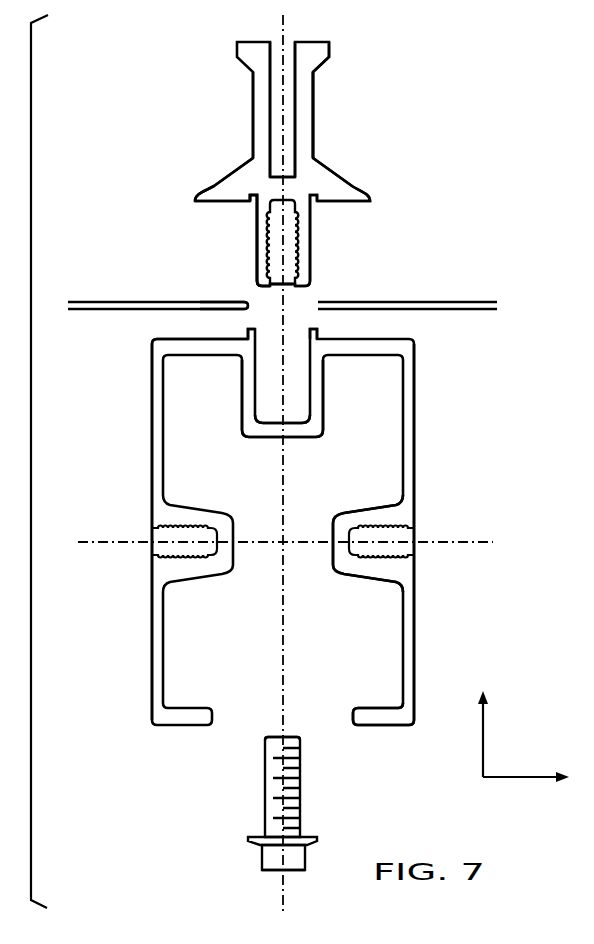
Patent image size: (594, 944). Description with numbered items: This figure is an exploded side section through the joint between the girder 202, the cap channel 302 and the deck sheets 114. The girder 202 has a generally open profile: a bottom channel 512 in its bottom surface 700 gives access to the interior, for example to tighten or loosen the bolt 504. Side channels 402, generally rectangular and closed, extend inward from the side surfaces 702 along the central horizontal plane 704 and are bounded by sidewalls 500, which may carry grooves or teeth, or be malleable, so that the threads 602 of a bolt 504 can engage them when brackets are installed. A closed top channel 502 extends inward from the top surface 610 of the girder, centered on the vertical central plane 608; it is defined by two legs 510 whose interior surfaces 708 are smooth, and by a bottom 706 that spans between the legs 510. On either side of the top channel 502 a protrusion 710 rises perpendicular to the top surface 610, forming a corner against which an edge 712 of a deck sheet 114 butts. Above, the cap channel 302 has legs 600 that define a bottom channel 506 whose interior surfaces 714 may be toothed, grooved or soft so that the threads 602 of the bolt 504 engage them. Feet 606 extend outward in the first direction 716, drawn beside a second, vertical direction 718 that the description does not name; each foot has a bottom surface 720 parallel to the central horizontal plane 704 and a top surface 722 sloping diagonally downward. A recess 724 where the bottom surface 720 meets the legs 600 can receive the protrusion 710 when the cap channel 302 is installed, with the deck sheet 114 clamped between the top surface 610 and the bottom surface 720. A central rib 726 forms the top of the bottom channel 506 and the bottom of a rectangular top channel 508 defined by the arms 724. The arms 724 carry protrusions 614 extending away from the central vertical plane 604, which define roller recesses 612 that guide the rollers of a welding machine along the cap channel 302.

The deck sheet 114 is at (413, 302).
The girder 202 is at (415, 645).
The cap channel 302 is at (312, 41).
The side channel 402 is at (359, 548).
The sidewall 500 is at (394, 531).
The top channel 502 is at (298, 358).
The bolt 504 is at (292, 872).
The bottom channel 506 is at (286, 280).
The top channel 508 is at (277, 49).
The leg 510 is at (243, 390).
The bottom channel 512 is at (243, 717).
The leg 600 is at (313, 244).
The threads 602 is at (301, 793).
The central vertical plane 604 is at (252, 880).
The foot 606 is at (333, 170).
The vertical central plane 608 is at (282, 886).
The top surface 610 is at (175, 338).
The roller recess 612 is at (329, 157).
The protrusion 614 is at (328, 50).
The bottom surface 700 is at (379, 726).
The side surface 702 is at (152, 648).
The central horizontal plane 704 is at (436, 544).
The bottom 706 is at (256, 387).
The interior surface 708 is at (310, 387).
The protrusion 710 is at (248, 331).
The edge 712 is at (257, 296).
The interior surface 714 is at (271, 240).
The first direction 716 is at (518, 776).
The y axis 718 is at (484, 741).
The bottom surface 720 is at (223, 203).
The top surface 722 is at (210, 188).
The arm 724 is at (259, 102).
The central rib 726 is at (277, 188).